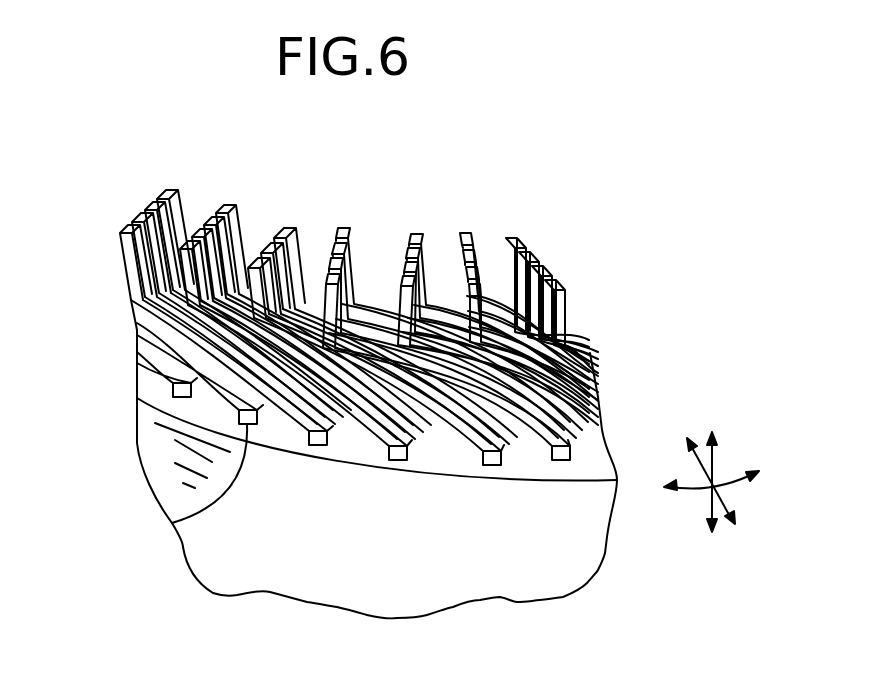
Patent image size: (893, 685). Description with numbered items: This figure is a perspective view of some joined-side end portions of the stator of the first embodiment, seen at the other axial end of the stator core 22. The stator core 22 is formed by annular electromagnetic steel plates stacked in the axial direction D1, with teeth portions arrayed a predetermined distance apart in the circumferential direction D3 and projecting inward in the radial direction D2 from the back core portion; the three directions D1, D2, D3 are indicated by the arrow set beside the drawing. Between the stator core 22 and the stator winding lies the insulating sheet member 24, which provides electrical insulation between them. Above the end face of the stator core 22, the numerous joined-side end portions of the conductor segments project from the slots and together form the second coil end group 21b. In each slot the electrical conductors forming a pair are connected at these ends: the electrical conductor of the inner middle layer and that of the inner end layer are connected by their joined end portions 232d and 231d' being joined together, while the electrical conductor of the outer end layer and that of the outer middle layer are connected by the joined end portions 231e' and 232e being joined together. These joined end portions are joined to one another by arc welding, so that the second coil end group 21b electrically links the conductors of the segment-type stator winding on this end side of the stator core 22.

The second coil end group 21b is at (125, 317).
The stator core 22 is at (209, 431).
The insulating sheet member 24 is at (172, 523).
The joined end portion 231e' is at (177, 316).
The joined end portion 232e is at (136, 218).
The joined end portion 232d is at (152, 202).
The joined end portion 231d' is at (254, 277).
The axial direction D1 is at (717, 500).
The radial direction D2 is at (732, 500).
The circumferential direction D3 is at (731, 474).